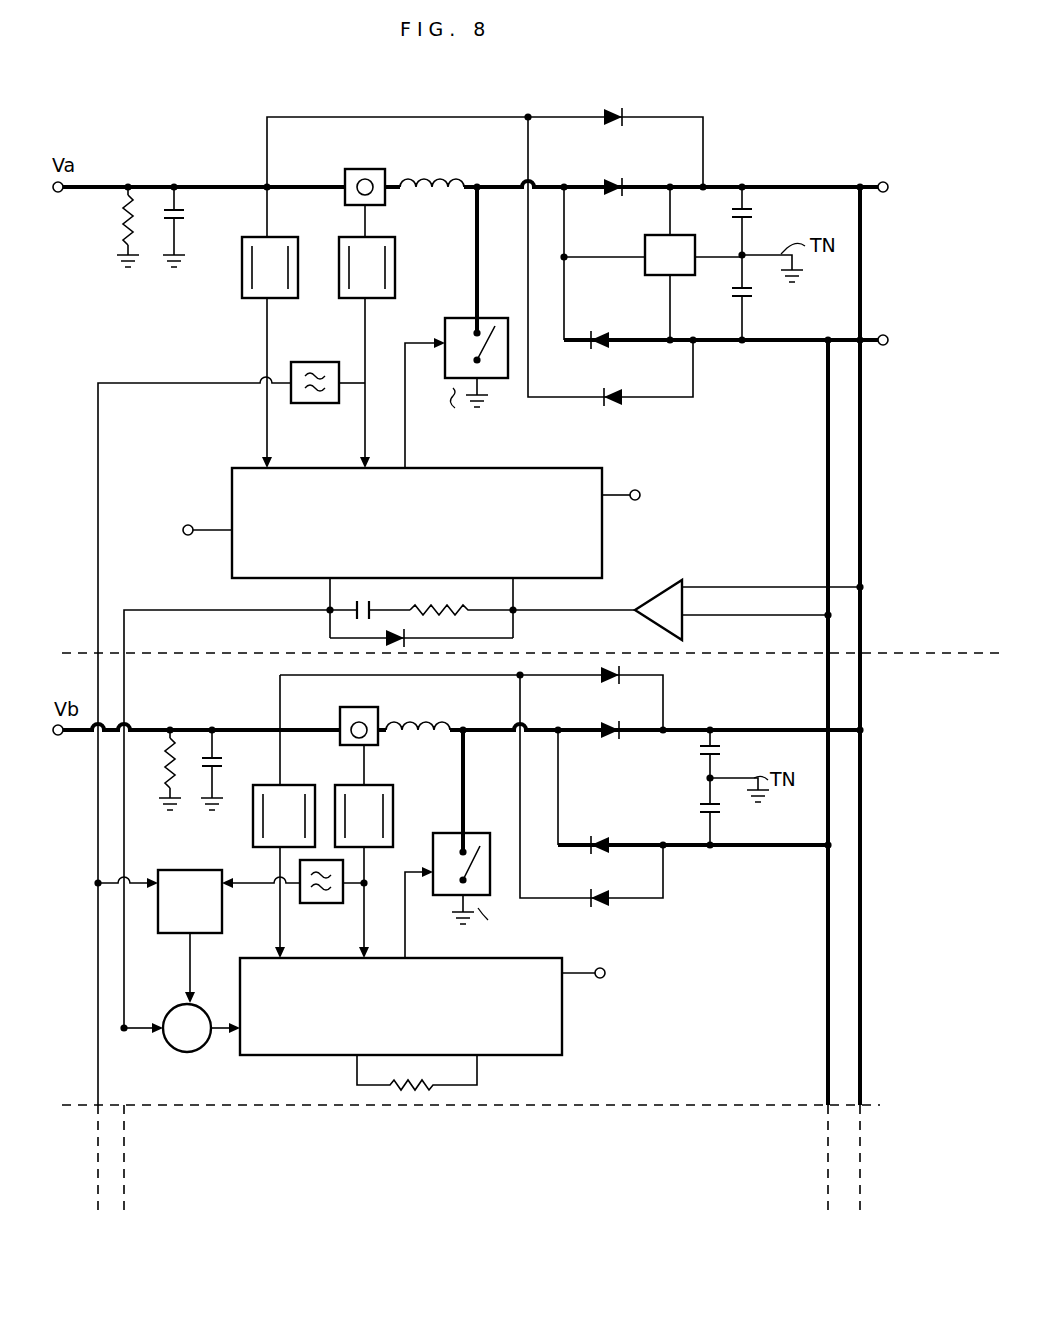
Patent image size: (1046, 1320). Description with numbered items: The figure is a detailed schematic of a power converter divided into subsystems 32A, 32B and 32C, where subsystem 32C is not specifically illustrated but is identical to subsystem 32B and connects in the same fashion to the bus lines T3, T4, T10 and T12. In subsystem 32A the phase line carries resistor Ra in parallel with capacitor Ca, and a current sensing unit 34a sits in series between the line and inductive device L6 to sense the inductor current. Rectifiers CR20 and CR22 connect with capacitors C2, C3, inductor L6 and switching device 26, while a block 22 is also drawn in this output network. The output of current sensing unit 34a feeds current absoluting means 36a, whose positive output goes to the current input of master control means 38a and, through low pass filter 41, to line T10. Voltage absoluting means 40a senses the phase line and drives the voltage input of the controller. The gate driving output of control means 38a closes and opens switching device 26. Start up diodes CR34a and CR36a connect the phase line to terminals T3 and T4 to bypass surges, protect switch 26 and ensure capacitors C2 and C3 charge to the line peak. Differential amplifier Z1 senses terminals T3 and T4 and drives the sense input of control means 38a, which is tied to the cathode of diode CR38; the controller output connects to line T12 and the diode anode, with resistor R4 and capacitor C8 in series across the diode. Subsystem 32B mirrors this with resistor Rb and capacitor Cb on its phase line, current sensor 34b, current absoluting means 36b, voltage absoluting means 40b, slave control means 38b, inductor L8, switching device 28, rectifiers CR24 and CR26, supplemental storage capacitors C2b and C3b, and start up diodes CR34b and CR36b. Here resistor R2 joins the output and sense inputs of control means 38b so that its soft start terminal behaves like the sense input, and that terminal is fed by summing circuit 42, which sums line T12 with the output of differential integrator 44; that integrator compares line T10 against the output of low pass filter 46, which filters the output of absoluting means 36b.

The subsystem 32A is at (531, 493).
The subsystem 32B is at (465, 1007).
The subsystem 32C is at (87, 1160).
The current sensing unit 34a is at (380, 168).
The current sensor 34b is at (356, 708).
The current absoluting means 36a is at (395, 238).
The current absoluting means 36b is at (392, 790).
The voltage absoluting means 40a is at (242, 298).
The voltage absoluting means 40b is at (252, 846).
The low pass filter 41 is at (326, 348).
The low pass filter 46 is at (302, 904).
The differential integrator 44 is at (162, 870).
The summing circuit 42 is at (192, 1056).
The switching device 26 is at (450, 322).
The switching device 28 is at (482, 834).
The load block 22 is at (648, 234).
The master control means 38a is at (510, 468).
The slave control means 38b is at (562, 1032).
The inductive device L6 is at (447, 176).
The inductor L8 is at (444, 690).
The rectifier CR20 is at (650, 158).
The rectifier CR22 is at (605, 332).
The rectifier CR24 is at (589, 740).
The rectifier CR26 is at (636, 816).
The start up diode CR34a is at (606, 108).
The start up diode CR34b is at (634, 680).
The start up diode CR36a is at (612, 405).
The start up diode CR36b is at (602, 910).
The diode CR38 is at (356, 640).
The capacitor C2 is at (755, 215).
The capacitor C3 is at (755, 296).
The supplemental storage capacitor C2b is at (722, 748).
The supplemental storage capacitor C3b is at (722, 808).
The capacitor C8 is at (368, 600).
The capacitor Ca is at (186, 222).
The capacitor Cb is at (230, 754).
The resistor Ra is at (122, 226).
The resistor Rb is at (162, 774).
The resistor R2 is at (404, 1094).
The resistor R4 is at (448, 600).
The differential amplifier Z1 is at (678, 582).
The terminal T3 is at (880, 182).
The terminal T4 is at (877, 353).
The line T10 is at (98, 450).
The line T12 is at (172, 608).